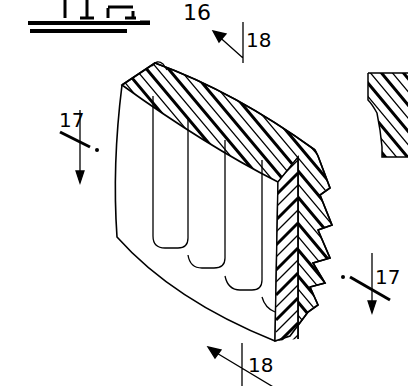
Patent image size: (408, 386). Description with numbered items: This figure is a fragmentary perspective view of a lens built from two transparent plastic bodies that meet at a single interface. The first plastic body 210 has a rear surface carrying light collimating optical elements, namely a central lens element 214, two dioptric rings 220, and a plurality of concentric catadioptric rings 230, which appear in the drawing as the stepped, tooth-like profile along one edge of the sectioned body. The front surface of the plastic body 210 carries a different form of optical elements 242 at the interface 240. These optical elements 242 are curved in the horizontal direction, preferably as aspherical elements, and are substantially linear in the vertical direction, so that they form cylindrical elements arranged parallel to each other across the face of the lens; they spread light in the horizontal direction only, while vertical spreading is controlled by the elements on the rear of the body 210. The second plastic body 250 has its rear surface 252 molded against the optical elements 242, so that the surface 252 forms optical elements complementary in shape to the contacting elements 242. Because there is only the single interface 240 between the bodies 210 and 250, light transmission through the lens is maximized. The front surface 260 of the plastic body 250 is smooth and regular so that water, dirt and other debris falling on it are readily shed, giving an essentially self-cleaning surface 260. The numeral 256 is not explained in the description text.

The first plastic body 210 is at (197, 60).
The central lens element 214 is at (313, 314).
The dioptric rings 220 is at (330, 243).
The concentric catadioptric rings 230 is at (327, 187).
The interface 240 is at (260, 107).
The optical elements 242 is at (157, 70).
The plastic body 250 is at (121, 84).
The rear surface 252 is at (229, 82).
The center web 256 is at (288, 124).
The front surface 260 is at (157, 266).